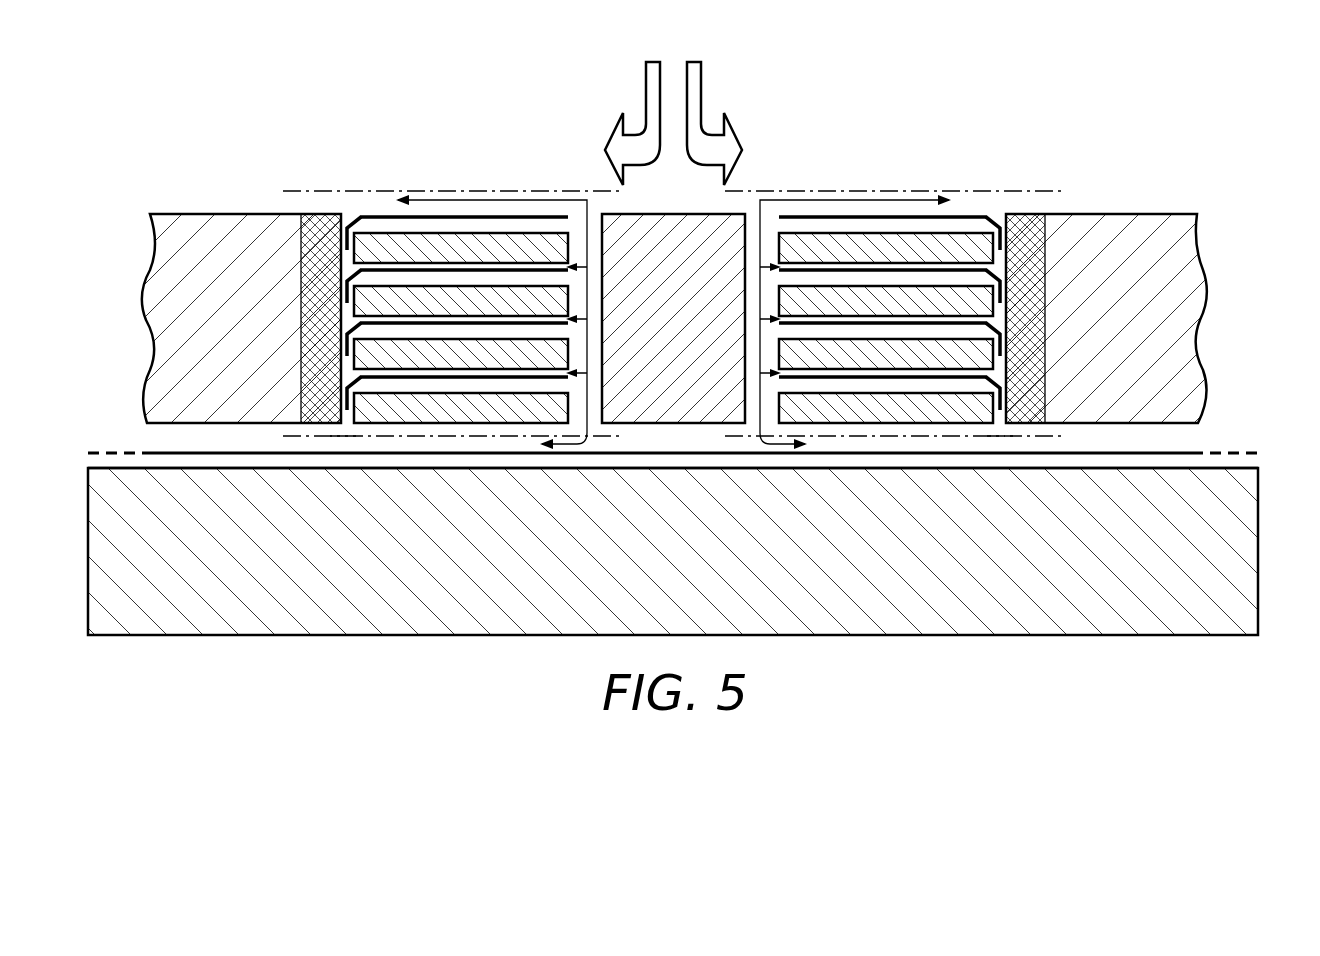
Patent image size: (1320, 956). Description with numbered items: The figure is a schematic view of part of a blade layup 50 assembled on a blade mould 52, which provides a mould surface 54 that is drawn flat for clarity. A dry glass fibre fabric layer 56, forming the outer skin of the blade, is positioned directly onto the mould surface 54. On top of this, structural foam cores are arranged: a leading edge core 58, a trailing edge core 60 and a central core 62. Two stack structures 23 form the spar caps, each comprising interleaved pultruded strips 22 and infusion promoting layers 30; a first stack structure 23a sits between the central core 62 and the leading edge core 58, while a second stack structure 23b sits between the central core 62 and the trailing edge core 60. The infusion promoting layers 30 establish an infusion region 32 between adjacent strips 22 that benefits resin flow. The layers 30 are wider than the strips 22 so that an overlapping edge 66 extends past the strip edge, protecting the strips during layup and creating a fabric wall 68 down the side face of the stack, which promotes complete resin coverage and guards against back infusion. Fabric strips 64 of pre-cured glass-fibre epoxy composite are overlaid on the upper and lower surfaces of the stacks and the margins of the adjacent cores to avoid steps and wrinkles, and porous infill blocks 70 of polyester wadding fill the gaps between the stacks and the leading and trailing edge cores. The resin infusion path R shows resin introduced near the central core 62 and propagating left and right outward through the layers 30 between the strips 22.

The blade layup 50 is at (1220, 158).
The blade mould 52 is at (1252, 551).
The mould surface 54 is at (1240, 462).
The dry glass fibre fabric layer 56 is at (1190, 453).
The leading edge core 58 is at (213, 222).
The trailing edge core 60 is at (1134, 222).
The central core 62 is at (675, 410).
The fabric strips 64 is at (296, 191).
The overlapping edge 66 is at (350, 250).
The fabric wall 68 is at (343, 436).
The porous infill block 70 is at (302, 316).
The pultruded strip 22 is at (673, 370).
The stack structure 23 is at (673, 260).
The first stack structure 23a is at (428, 242).
The second stack structure 23b is at (919, 242).
The infusion promoting layer 30 is at (498, 216).
The infusion region 32 is at (446, 333).
The resin infusion path R is at (789, 199).